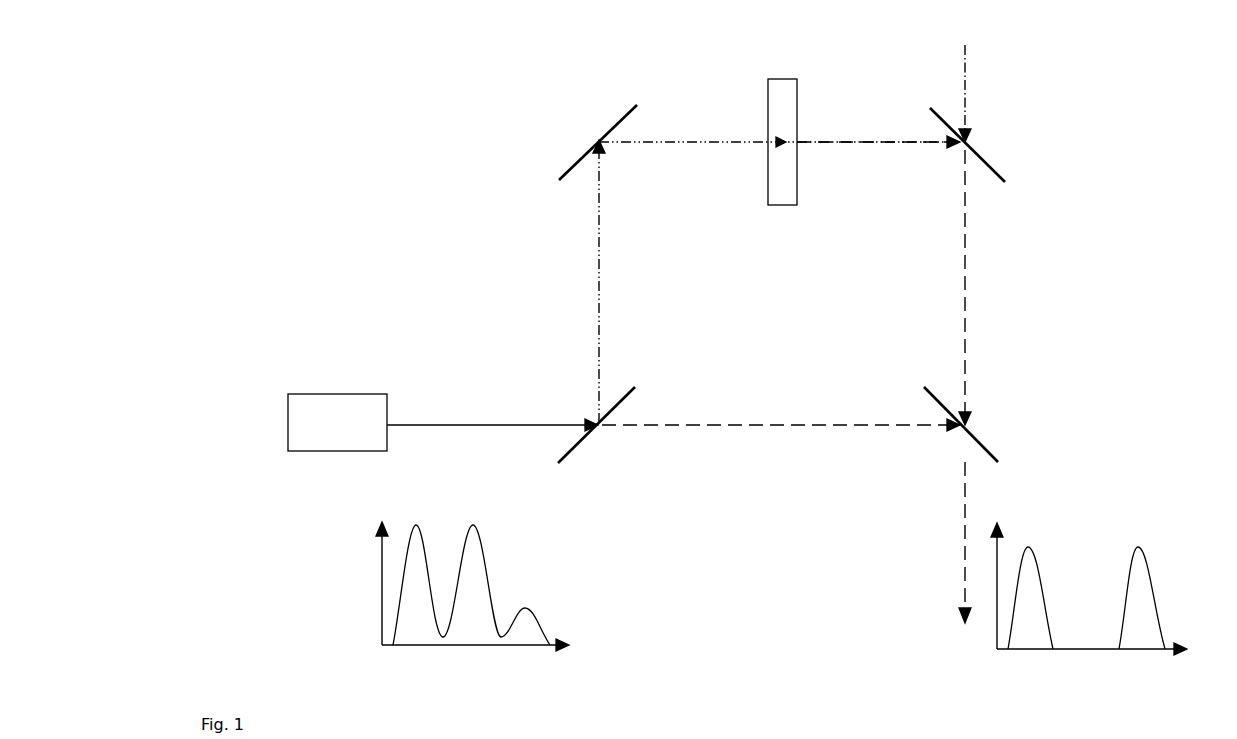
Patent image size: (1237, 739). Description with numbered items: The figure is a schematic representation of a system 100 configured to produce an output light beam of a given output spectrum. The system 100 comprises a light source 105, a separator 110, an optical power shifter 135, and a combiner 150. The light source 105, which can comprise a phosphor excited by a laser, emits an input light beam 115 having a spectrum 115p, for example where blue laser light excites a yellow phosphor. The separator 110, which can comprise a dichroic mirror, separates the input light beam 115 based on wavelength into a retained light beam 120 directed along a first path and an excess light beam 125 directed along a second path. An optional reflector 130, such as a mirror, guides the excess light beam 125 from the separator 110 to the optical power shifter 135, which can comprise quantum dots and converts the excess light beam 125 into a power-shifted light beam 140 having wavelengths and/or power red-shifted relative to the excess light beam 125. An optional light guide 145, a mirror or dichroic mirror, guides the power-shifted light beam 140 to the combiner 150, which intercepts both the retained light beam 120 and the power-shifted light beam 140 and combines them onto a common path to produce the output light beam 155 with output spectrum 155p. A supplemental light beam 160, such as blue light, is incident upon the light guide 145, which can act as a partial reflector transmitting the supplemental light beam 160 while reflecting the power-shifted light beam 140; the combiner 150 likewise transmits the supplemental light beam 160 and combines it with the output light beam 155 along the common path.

The system 100 is at (412, 176).
The light source 105 is at (337, 422).
The separator 110 is at (587, 448).
The input light beam 115 is at (460, 421).
The spectrum 115p is at (360, 610).
The retained light beam 120 is at (775, 430).
The excess light beam 125 is at (596, 318).
The reflector 130 is at (610, 128).
The optical power shifter 135 is at (800, 96).
The power-shifted light beam 140 is at (871, 148).
The light guide 145 is at (985, 165).
The combiner 150 is at (975, 433).
The output light beam 155 is at (960, 498).
The output spectrum 155p is at (1101, 526).
The supplemental light beam 160 is at (968, 88).